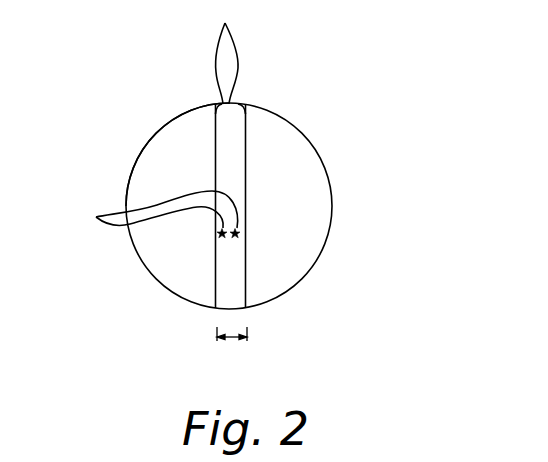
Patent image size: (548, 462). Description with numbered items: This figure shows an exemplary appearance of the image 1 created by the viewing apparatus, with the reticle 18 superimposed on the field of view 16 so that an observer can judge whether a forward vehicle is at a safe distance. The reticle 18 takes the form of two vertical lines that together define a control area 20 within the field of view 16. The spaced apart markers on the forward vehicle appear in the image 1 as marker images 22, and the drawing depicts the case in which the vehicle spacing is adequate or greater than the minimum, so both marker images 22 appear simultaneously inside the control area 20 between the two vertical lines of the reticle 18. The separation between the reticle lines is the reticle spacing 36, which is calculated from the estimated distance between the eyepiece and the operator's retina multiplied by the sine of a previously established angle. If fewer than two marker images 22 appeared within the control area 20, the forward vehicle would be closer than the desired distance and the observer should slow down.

The candle 1 is at (289, 140).
The field of view 16 is at (157, 172).
The reticle 18 is at (230, 52).
The control area 20 is at (229, 286).
The marker images 22 is at (147, 214).
The reticle spacing 36 is at (232, 337).